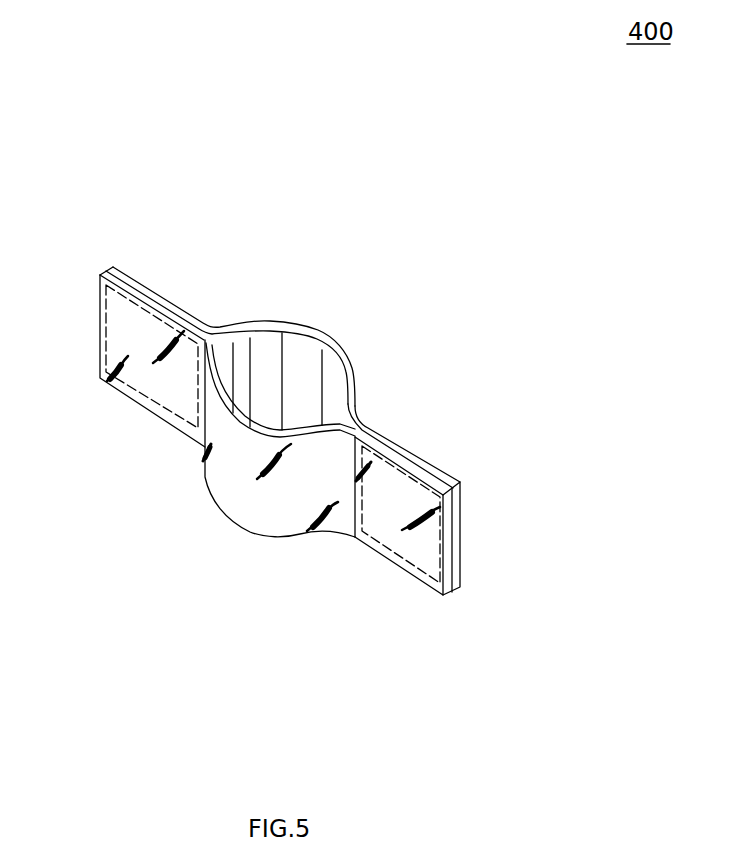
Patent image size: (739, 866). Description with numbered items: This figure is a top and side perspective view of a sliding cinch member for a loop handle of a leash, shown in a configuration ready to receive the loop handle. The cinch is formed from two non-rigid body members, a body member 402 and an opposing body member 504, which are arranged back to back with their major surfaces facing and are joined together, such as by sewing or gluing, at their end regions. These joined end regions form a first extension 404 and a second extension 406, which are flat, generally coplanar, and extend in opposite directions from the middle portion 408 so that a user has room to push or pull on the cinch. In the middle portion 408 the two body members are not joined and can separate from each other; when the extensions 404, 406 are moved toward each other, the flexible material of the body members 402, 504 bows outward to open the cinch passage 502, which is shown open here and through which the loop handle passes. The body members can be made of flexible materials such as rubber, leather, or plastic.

The body member 402 is at (269, 370).
The first extension 404 is at (145, 338).
The second extension 406 is at (418, 507).
The middle portion 408 is at (318, 327).
The cinch passage 502 is at (272, 370).
The opposing body member 504 is at (351, 383).